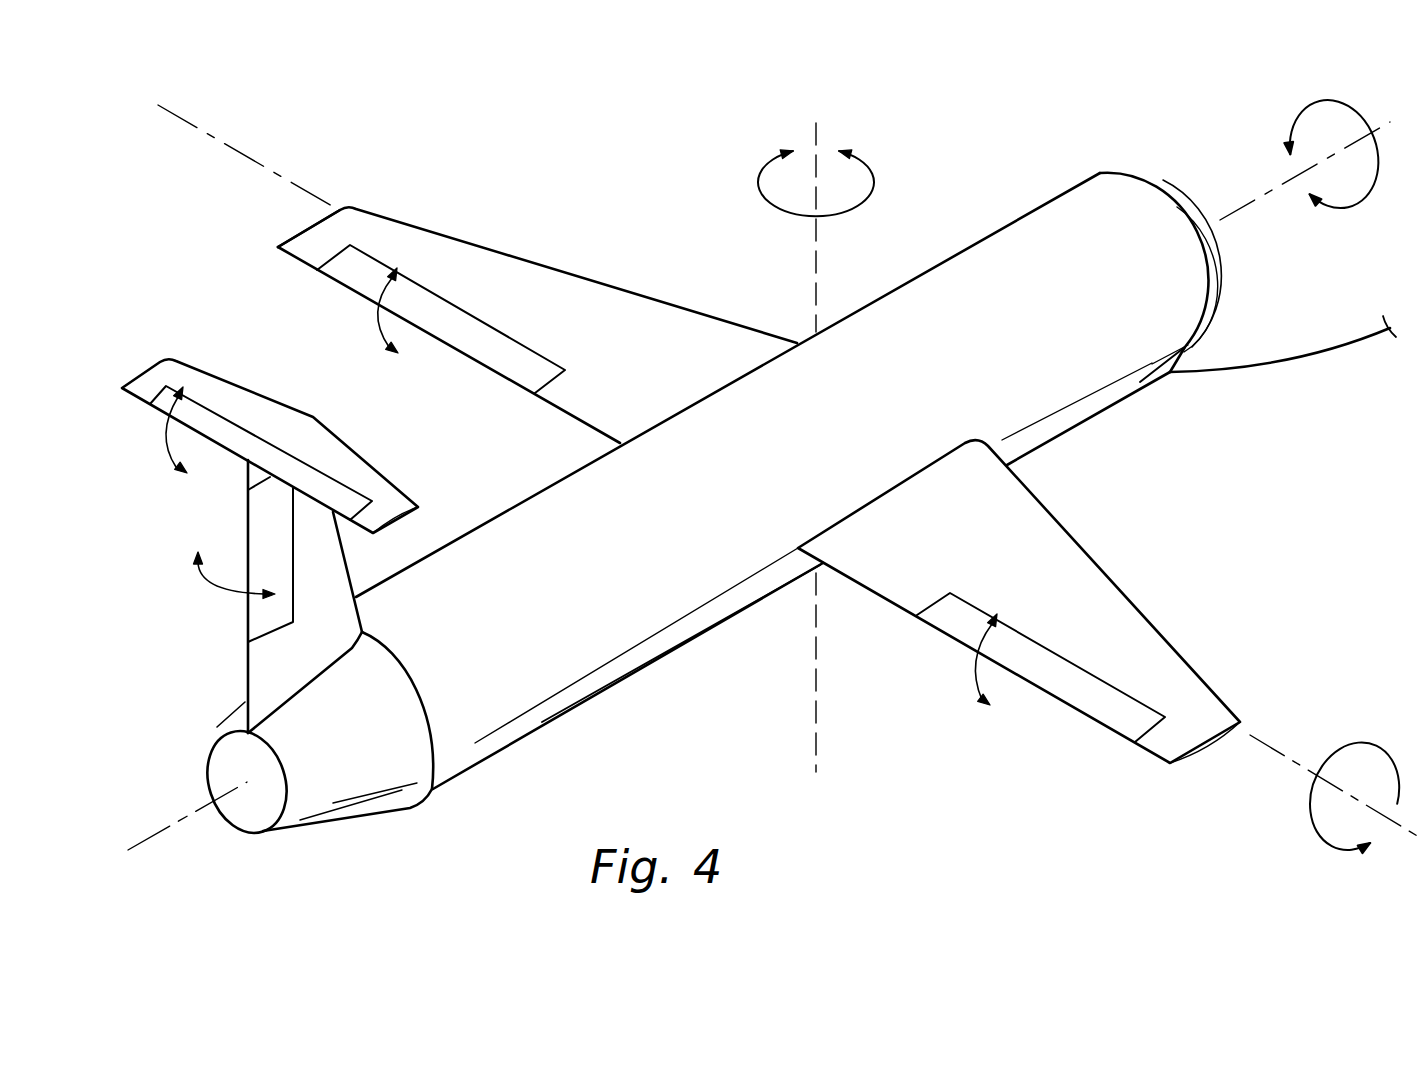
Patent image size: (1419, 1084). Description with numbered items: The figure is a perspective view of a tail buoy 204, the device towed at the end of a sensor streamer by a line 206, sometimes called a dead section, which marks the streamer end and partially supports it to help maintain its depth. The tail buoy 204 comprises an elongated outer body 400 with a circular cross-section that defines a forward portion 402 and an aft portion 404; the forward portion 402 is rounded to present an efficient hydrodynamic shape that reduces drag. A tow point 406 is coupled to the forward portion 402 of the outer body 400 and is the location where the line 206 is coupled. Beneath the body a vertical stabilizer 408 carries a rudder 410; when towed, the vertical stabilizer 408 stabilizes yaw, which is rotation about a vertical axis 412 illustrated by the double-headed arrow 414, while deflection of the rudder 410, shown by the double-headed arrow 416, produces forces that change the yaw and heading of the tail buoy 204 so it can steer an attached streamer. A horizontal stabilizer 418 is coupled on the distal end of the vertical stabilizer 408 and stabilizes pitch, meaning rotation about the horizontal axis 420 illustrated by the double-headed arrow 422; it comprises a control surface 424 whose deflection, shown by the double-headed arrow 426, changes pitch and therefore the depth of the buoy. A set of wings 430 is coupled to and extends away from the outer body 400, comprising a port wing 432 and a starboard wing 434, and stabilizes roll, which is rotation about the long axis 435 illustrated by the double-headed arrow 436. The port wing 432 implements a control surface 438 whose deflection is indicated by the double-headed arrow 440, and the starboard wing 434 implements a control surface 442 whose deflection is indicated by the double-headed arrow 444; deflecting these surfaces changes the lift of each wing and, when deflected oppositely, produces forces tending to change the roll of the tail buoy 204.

The tail buoy 204 is at (735, 464).
The line 206 is at (1286, 368).
The elongated outer body 400 is at (985, 243).
The forward portion 402 is at (1121, 146).
The aft portion 404 is at (247, 858).
The tow point 406 is at (1146, 414).
The vertical stabilizer 408 is at (287, 596).
The rudder 410 is at (248, 520).
The vertical axis 412 is at (815, 282).
The double-headed arrow 414 is at (765, 197).
The double-headed arrow 416 is at (215, 592).
The horizontal stabilizer 418 is at (254, 422).
The horizontal axis 420 is at (1277, 750).
The double-headed arrow 422 is at (1313, 817).
The control surface 424 is at (198, 415).
The double-headed arrow 426 is at (160, 444).
The set of wings 430 is at (699, 455).
The port wing 432 is at (305, 228).
The starboard wing 434 is at (1203, 747).
The long axis 435 is at (1248, 202).
The double-headed arrow 436 is at (1353, 207).
The control surface 438 is at (473, 343).
The double-headed arrow 440 is at (372, 322).
The control surface 442 is at (1073, 690).
The double-headed arrow 444 is at (972, 668).